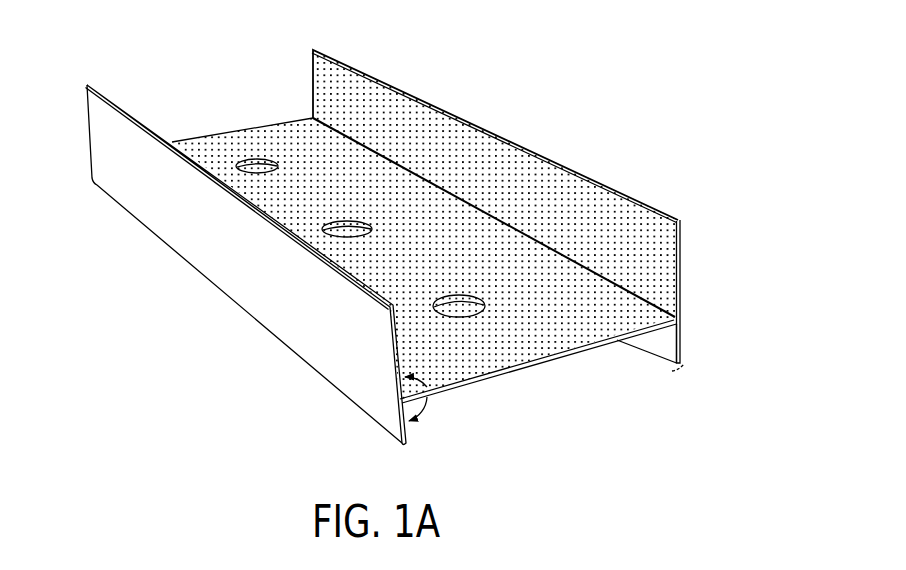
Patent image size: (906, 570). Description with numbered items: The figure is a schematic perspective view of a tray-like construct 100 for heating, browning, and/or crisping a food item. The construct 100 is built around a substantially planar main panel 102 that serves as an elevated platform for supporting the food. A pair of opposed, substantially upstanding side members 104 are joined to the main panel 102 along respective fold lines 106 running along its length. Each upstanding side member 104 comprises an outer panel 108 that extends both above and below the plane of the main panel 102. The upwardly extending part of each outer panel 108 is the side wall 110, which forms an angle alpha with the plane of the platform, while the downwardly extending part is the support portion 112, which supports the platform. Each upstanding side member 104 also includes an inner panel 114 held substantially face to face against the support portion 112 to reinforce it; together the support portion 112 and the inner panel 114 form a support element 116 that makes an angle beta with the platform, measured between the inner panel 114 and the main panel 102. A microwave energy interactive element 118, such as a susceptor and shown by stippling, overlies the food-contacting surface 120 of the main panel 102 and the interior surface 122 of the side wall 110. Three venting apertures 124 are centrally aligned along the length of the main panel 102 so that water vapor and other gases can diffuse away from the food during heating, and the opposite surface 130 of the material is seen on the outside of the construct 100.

The construct 100 is at (645, 69).
The main panel 102 is at (424, 235).
The upstanding side members 104 is at (112, 84).
The fold lines 106 is at (532, 239).
The outer panel 108 is at (682, 295).
The side wall 110 is at (692, 255).
The support portion 112 is at (691, 342).
The inner panel 114 is at (662, 343).
The support element 116 is at (688, 378).
The microwave energy interactive element 118 is at (299, 137).
The food-contacting surface 120 is at (424, 248).
The interior surface 122 is at (539, 235).
The venting apertures 124 is at (366, 222).
The opposite surface 130 is at (245, 250).